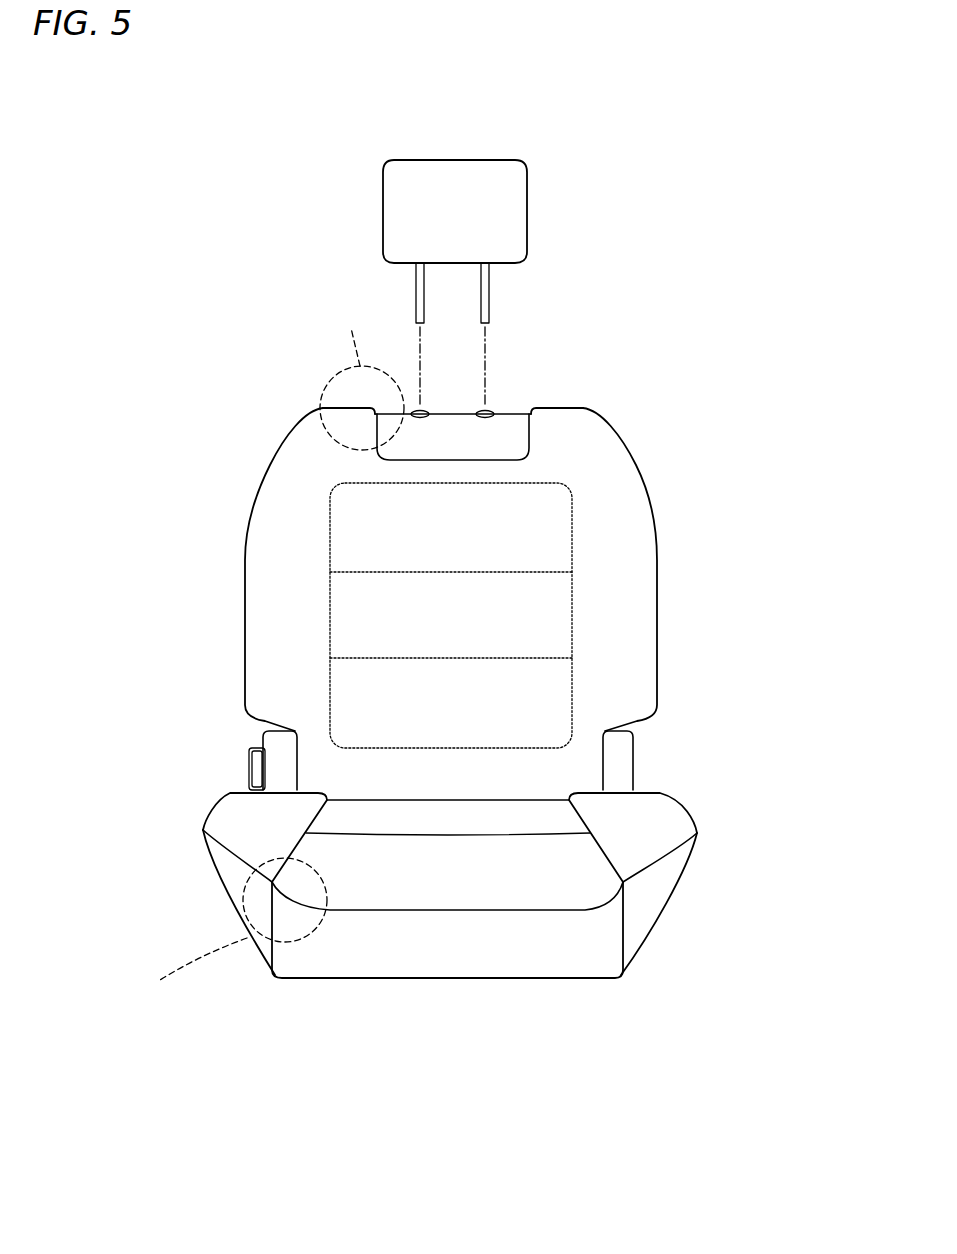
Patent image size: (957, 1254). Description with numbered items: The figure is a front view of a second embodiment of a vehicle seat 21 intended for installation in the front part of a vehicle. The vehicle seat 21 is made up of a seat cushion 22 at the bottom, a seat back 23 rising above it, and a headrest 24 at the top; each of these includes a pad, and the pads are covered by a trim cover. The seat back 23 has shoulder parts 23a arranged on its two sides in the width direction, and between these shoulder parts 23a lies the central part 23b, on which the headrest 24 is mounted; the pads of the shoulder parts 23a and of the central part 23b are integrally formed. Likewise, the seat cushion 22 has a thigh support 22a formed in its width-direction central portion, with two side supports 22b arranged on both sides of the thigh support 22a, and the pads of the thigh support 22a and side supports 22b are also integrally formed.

The vehicle seat 21 is at (258, 146).
The seat cushion 22 is at (457, 910).
The thigh support 22a is at (430, 963).
The side supports 22b is at (232, 812).
The seat back 23 is at (474, 567).
The shoulder parts 23a is at (347, 413).
The central part 23b is at (445, 423).
The headrest 24 is at (527, 207).